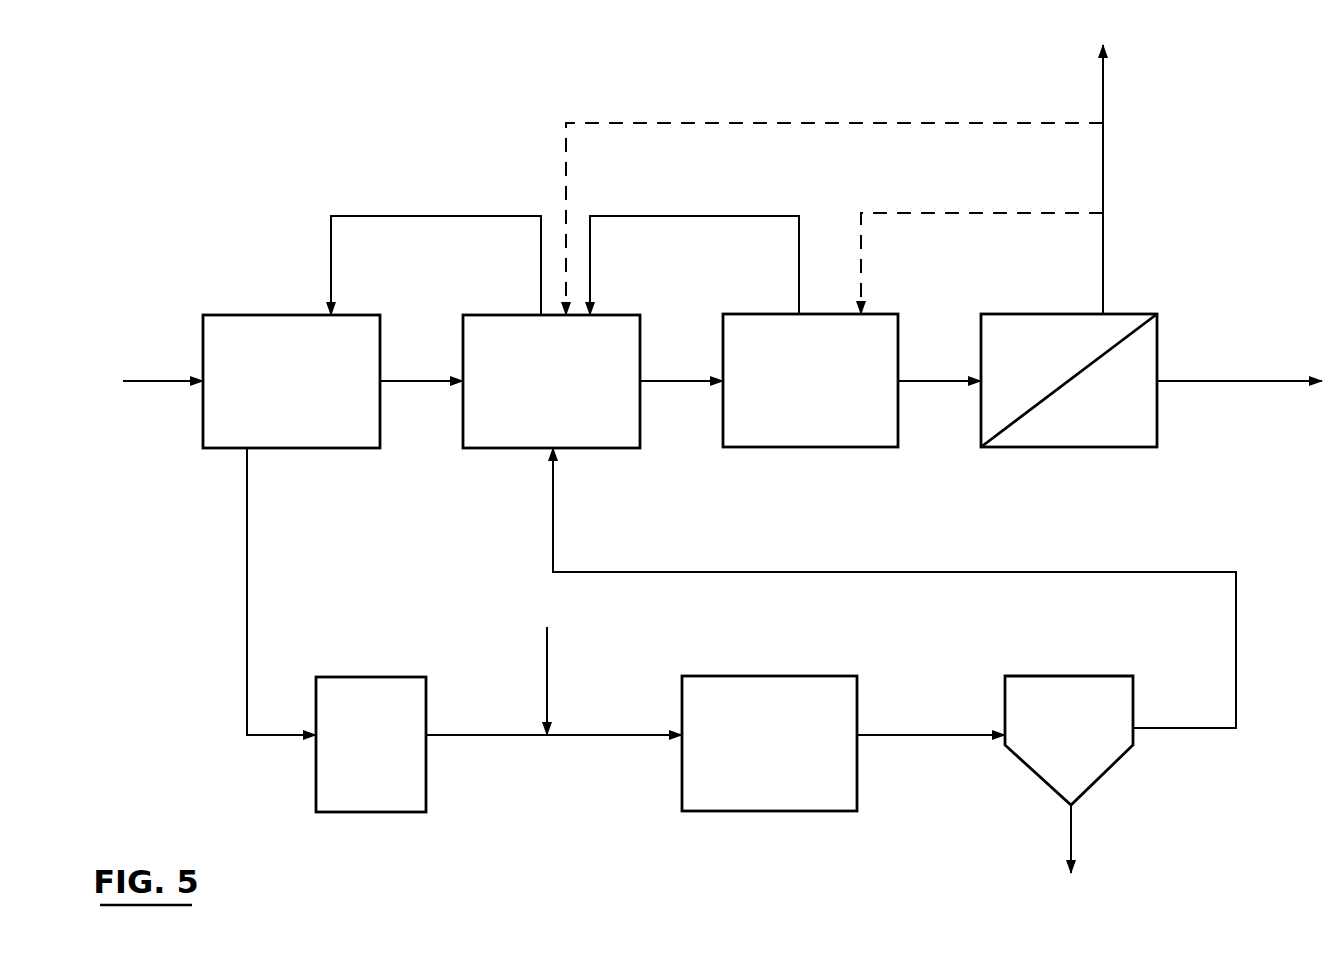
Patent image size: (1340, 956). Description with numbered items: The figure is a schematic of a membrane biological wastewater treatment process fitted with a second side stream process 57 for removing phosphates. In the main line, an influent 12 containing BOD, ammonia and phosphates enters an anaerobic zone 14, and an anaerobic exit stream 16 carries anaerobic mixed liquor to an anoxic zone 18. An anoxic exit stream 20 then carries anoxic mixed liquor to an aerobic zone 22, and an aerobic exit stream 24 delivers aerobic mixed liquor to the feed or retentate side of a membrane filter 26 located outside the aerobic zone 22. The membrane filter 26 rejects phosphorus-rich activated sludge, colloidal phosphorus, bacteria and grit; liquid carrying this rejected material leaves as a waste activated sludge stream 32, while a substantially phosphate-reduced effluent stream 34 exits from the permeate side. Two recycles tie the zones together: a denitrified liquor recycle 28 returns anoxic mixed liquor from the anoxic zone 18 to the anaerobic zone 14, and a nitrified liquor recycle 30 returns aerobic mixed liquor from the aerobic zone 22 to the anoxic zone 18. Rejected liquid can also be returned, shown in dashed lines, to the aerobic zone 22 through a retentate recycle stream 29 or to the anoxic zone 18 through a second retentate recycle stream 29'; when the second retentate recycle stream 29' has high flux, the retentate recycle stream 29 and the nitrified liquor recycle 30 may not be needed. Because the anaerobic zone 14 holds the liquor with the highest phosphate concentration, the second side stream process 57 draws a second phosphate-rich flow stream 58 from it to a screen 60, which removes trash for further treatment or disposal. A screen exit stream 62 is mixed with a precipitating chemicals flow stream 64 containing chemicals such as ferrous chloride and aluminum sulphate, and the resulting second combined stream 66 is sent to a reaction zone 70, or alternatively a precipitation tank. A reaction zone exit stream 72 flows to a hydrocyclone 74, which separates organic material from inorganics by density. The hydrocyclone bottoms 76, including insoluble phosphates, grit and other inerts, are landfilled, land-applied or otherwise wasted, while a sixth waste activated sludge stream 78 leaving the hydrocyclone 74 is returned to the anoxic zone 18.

The influent 12 is at (143, 383).
The anaerobic zone 14 is at (293, 451).
The anaerobic exit stream 16 is at (432, 384).
The anoxic zone 18 is at (510, 451).
The anoxic exit stream 20 is at (680, 384).
The aerobic zone 22 is at (808, 450).
The aerobic exit stream 24 is at (938, 384).
The membrane filter 26 is at (1077, 450).
The denitrified liquor recycle 28 is at (433, 215).
The retentate recycle stream 29 is at (982, 227).
The second retentate recycle stream 29' is at (834, 182).
The nitrified liquor recycle 30 is at (697, 215).
The waste activated sludge stream 32 is at (1103, 88).
The effluent stream 34 is at (1228, 384).
The second side stream process 57 is at (226, 756).
The second phosphate-rich flow stream 58 is at (247, 605).
The screen 60 is at (372, 816).
The screen exit stream 62 is at (482, 736).
The precipitating chemicals flow stream 64 is at (547, 655).
The second combined stream 66 is at (614, 736).
The reaction zone 70 is at (765, 814).
The reaction zone exit stream 72 is at (928, 736).
The hydrocyclone 74 is at (1036, 776).
The hydrocyclone bottoms 76 is at (1071, 840).
The sixth waste activated sludge stream 78 is at (553, 538).